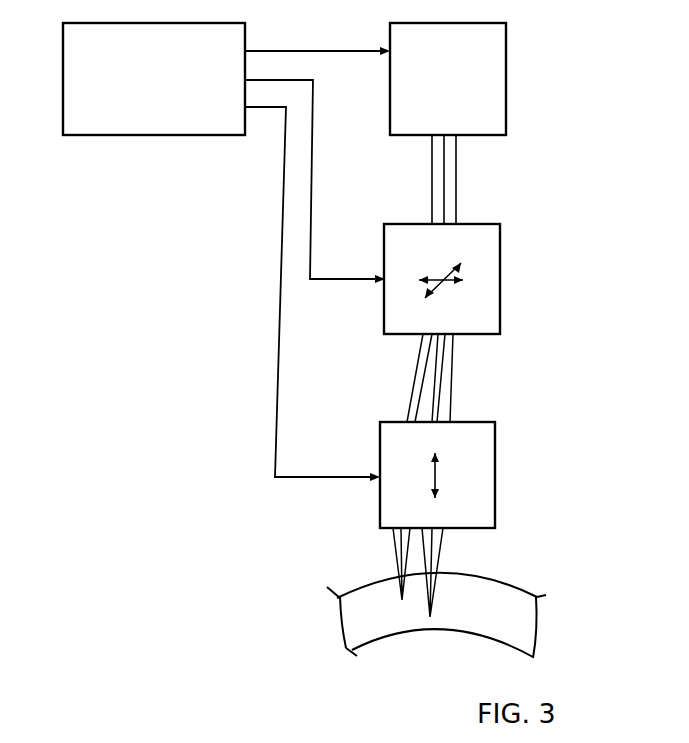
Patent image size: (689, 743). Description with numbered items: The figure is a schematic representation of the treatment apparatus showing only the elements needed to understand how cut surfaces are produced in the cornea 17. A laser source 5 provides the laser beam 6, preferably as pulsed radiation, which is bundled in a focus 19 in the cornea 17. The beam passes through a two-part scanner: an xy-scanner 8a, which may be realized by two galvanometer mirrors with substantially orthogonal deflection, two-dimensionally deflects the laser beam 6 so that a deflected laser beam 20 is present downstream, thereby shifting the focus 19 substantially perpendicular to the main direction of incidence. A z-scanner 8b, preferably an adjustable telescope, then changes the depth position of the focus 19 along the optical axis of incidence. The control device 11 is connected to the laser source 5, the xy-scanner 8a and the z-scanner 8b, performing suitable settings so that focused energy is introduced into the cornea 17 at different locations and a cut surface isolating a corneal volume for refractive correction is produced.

The control device 11 is at (63, 80).
The laser source 5 is at (506, 80).
The laser beam 6 is at (456, 153).
The xy-scanner 8a is at (500, 277).
The z-scanner 8b is at (495, 477).
The deflected laser beam 20 is at (447, 376).
The cornea 17 is at (513, 578).
The focus 19 is at (401, 600).